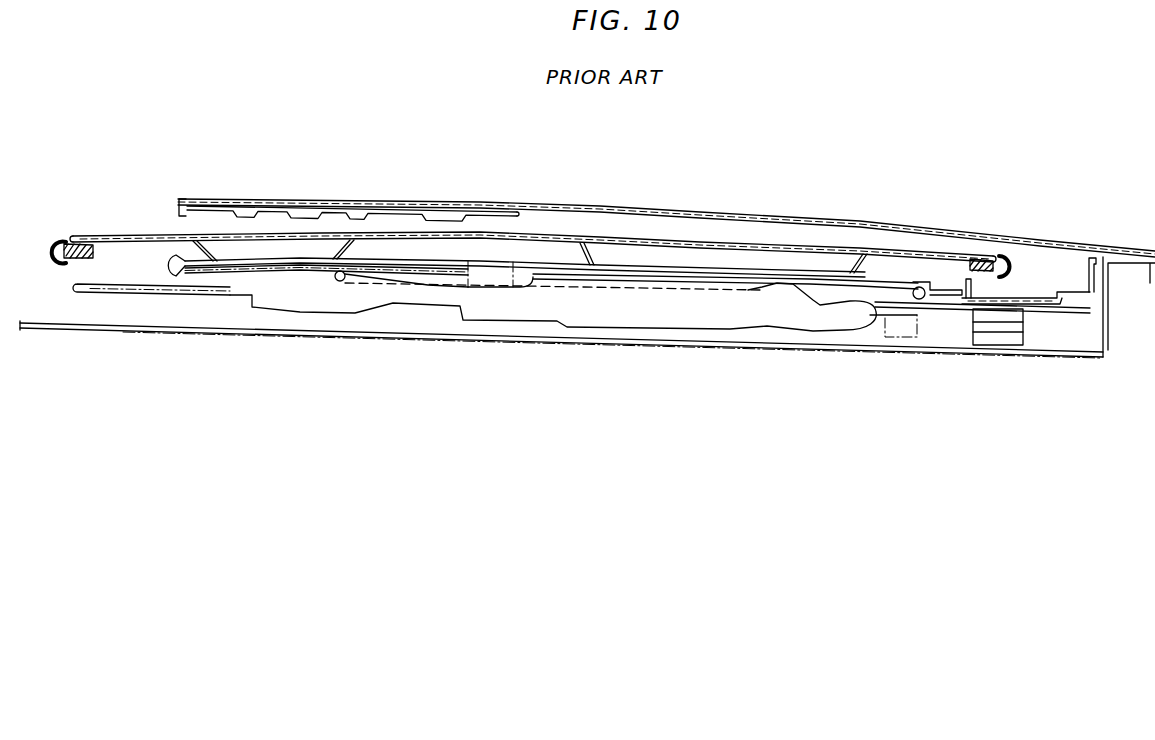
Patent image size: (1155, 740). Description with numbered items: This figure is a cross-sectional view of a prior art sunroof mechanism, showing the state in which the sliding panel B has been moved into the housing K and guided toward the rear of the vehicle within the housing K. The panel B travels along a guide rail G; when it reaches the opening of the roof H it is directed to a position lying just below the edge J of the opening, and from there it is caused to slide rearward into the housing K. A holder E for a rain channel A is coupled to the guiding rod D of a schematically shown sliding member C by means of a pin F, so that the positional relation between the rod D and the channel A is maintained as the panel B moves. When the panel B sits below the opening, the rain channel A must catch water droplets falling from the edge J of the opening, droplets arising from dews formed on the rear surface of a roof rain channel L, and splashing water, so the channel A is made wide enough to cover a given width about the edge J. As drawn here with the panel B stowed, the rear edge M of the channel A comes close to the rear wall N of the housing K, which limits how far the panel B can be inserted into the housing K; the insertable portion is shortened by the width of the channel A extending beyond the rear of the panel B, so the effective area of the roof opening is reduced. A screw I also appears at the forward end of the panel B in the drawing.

The rain channel A is at (1013, 300).
The panel B is at (628, 235).
The sliding member C is at (667, 322).
The guiding rod D is at (888, 294).
The holder E is at (950, 302).
The pin F is at (925, 287).
The guide rail G is at (116, 287).
The roof H is at (567, 205).
The fastening screw I is at (90, 218).
The edge of the opening J is at (179, 208).
The housing K is at (740, 224).
The roof rain channel L is at (364, 212).
The rear edge of the channel M is at (1095, 262).
The rear wall of the housing N is at (1108, 318).